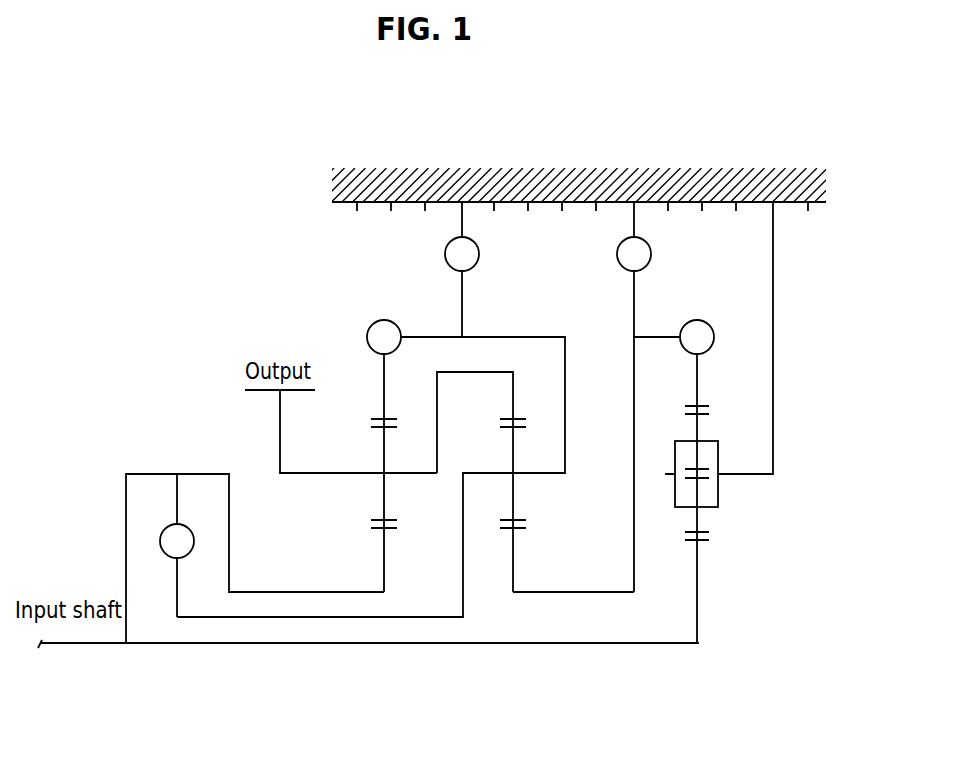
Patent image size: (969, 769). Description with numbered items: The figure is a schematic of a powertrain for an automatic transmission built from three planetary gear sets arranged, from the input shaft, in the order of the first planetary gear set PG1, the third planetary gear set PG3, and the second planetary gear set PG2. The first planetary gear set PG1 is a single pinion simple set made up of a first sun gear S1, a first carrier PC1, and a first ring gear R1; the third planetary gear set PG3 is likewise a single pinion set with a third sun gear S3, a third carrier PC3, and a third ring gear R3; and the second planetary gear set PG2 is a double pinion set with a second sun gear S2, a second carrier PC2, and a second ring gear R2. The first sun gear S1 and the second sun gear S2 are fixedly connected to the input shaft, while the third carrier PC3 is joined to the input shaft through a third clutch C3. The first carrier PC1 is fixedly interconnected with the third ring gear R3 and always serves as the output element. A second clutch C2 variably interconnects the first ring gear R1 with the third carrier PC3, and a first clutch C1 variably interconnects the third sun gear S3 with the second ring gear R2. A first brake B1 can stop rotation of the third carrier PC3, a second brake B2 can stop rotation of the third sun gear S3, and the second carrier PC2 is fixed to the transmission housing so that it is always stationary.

The first brake B1 is at (462, 269).
The second brake B2 is at (634, 397).
The first clutch C1 is at (674, 337).
The second clutch C2 is at (371, 468).
The third clutch C3 is at (177, 545).
The first ring gear R1 is at (388, 391).
The second ring gear R2 is at (701, 381).
The third ring gear R3 is at (517, 391).
The first pinion carrier PC1 is at (386, 477).
The second carrier PC2 is at (719, 354).
The third carrier PC3 is at (516, 477).
The first sun gear S1 is at (388, 558).
The second sun gear S2 is at (701, 559).
The third sun gear S3 is at (517, 558).
The first planetary gear set PG1 is at (386, 652).
The second planetary gear set PG2 is at (698, 652).
The third planetary gear set PG3 is at (516, 652).